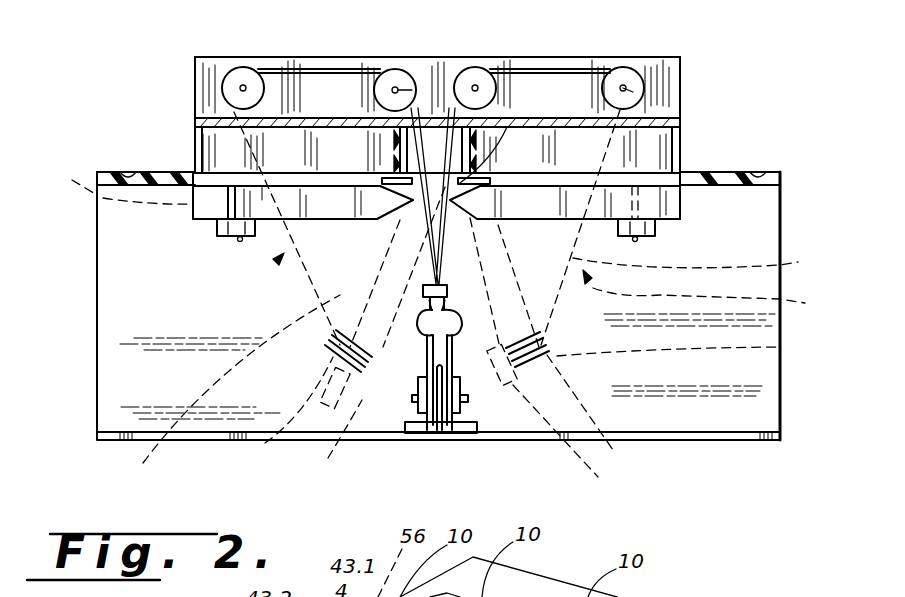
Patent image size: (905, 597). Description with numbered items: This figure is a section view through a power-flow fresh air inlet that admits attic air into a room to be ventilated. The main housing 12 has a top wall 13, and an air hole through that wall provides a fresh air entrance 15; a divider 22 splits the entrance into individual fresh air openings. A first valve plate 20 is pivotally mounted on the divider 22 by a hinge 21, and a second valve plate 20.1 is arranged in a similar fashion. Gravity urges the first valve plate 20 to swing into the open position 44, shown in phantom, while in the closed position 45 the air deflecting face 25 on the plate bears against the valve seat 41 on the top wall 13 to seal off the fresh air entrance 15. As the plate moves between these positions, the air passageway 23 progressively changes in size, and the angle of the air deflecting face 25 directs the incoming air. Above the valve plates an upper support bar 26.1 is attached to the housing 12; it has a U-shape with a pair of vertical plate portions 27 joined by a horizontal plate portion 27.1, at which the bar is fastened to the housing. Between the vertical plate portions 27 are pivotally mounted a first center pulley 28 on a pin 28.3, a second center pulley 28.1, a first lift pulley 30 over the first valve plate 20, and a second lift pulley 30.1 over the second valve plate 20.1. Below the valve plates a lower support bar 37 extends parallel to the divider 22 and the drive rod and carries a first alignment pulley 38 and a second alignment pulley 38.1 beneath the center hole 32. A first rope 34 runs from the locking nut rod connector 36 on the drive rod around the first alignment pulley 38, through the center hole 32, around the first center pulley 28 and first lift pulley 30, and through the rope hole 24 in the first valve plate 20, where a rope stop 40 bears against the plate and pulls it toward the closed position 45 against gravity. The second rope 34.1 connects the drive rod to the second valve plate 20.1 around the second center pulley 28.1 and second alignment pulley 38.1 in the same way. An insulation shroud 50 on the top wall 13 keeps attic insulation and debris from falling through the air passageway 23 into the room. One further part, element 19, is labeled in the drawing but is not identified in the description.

The main housing 12 is at (97, 253).
The top wall 13 is at (722, 170).
The fresh air entrance 15 is at (316, 124).
The guide plate 19 is at (208, 211).
The first valve plate 20 is at (345, 213).
The second valve plate 20.1 is at (537, 213).
The hinge 21 is at (395, 57).
The divider 22 is at (680, 160).
The air passageway 23 is at (281, 257).
The rope hole 24 is at (805, 360).
The air deflecting face 25 is at (372, 283).
The upper support bar 26.1 is at (199, 57).
The vertical plate portions 27 is at (213, 90).
The horizontal plate portion 27.1 is at (660, 126).
The first center pulley 28 is at (403, 80).
The second center pulley 28.1 is at (455, 80).
The pin 28.3 is at (400, 90).
The first lift pulley 30 is at (246, 78).
The second lift pulley 30.1 is at (637, 78).
The center hole 32 is at (507, 127).
The first rope 34 is at (348, 72).
The second rope 34.1 is at (548, 70).
The locking nut rod connector 36 is at (426, 318).
The lower support bar 37 is at (438, 420).
The first alignment pulley 38 is at (418, 398).
The second alignment pulley 38.1 is at (462, 393).
The rope stop 40 is at (228, 238).
The valve seat 41 is at (193, 191).
The open position 44 is at (613, 447).
The closed position 45 is at (273, 215).
The insulation shroud 50 is at (682, 90).